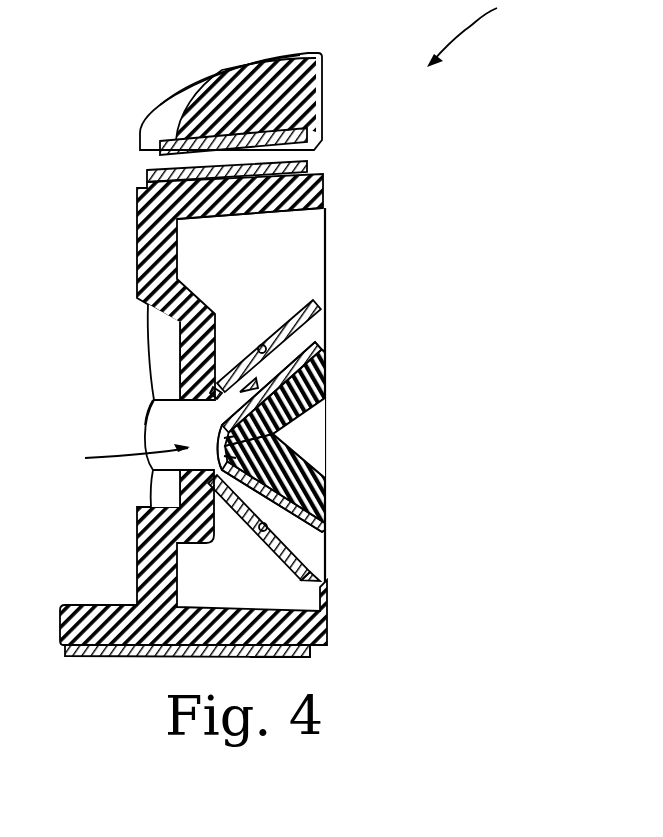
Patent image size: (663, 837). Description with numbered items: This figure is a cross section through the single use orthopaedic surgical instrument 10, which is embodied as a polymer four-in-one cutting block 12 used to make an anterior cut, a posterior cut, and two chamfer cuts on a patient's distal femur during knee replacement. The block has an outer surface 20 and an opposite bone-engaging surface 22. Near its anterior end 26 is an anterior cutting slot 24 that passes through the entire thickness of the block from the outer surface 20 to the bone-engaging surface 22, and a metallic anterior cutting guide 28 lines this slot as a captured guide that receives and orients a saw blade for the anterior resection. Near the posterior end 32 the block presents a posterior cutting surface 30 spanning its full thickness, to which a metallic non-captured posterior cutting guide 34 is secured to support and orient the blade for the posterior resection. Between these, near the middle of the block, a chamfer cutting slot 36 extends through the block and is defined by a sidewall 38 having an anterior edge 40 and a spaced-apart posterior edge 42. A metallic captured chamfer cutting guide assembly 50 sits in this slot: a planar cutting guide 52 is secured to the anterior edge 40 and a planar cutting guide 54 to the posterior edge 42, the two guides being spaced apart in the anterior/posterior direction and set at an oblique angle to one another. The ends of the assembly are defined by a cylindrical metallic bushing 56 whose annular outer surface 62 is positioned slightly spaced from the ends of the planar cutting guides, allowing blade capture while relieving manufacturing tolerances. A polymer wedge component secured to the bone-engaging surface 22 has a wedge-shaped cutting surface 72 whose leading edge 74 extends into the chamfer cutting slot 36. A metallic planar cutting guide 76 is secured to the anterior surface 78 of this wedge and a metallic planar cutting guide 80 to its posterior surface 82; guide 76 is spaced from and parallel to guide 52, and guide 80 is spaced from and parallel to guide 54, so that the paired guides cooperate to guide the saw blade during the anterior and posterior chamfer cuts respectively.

The single use orthopaedic surgical instrument 10 is at (477, 33).
The 4-in-1 cutting block 12 is at (323, 115).
The outer surface 20 is at (140, 200).
The bone-engaging surface 22 is at (330, 251).
The anterior cutting slot 24 is at (150, 171).
The anterior end 26 is at (209, 83).
The anterior cutting guide 28 is at (322, 149).
The posterior cutting surface 30 is at (90, 657).
The posterior end 32 is at (62, 624).
The posterior cutting guide 34 is at (292, 656).
The chamfer cutting slot 36 is at (158, 401).
The sidewall 38 is at (157, 477).
The anterior edge 40 is at (262, 345).
The posterior edge 42 is at (262, 531).
The chamfer cutting guide assembly 50 is at (122, 458).
The planar cutting guide 52 is at (319, 320).
The planar cutting guide 54 is at (318, 554).
The metallic bushing 56 is at (146, 437).
The outer surface 62 is at (152, 410).
The wedge-shaped cutting surface 72 is at (323, 487).
The leading edge 74 is at (224, 431).
The planar cutting guide 76 is at (323, 382).
The anterior surface 78 is at (323, 356).
The planar cutting guide 80 is at (322, 516).
The posterior surface 82 is at (285, 457).